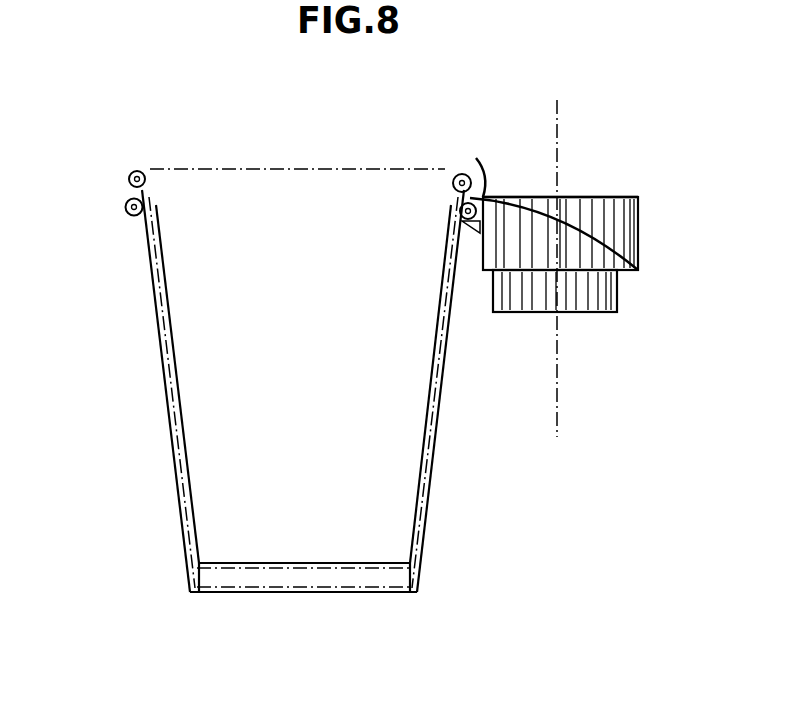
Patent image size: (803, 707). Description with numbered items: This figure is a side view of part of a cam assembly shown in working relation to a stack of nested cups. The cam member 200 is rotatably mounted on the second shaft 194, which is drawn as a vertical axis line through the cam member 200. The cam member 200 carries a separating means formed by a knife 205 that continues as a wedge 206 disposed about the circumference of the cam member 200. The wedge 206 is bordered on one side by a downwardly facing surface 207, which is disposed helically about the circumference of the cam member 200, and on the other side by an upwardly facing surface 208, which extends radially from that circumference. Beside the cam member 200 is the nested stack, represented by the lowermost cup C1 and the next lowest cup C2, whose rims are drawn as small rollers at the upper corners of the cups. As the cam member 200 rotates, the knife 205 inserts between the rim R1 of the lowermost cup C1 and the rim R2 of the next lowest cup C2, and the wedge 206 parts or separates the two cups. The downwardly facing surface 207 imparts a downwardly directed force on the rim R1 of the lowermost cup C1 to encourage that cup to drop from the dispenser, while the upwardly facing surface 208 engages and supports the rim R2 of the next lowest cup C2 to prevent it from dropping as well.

The second shaft 194 is at (556, 408).
The cam member 200 is at (581, 312).
The knife 205 is at (469, 161).
The wedge 206 is at (552, 202).
The downwardly facing surface 207 is at (622, 272).
The upwardly facing surface 208 is at (615, 198).
The rim of the lowermost cup R1 is at (128, 216).
The rim of the next lowest cup R2 is at (128, 185).
The lowermost cup C1 is at (418, 578).
The next lowest cup C2 is at (225, 566).